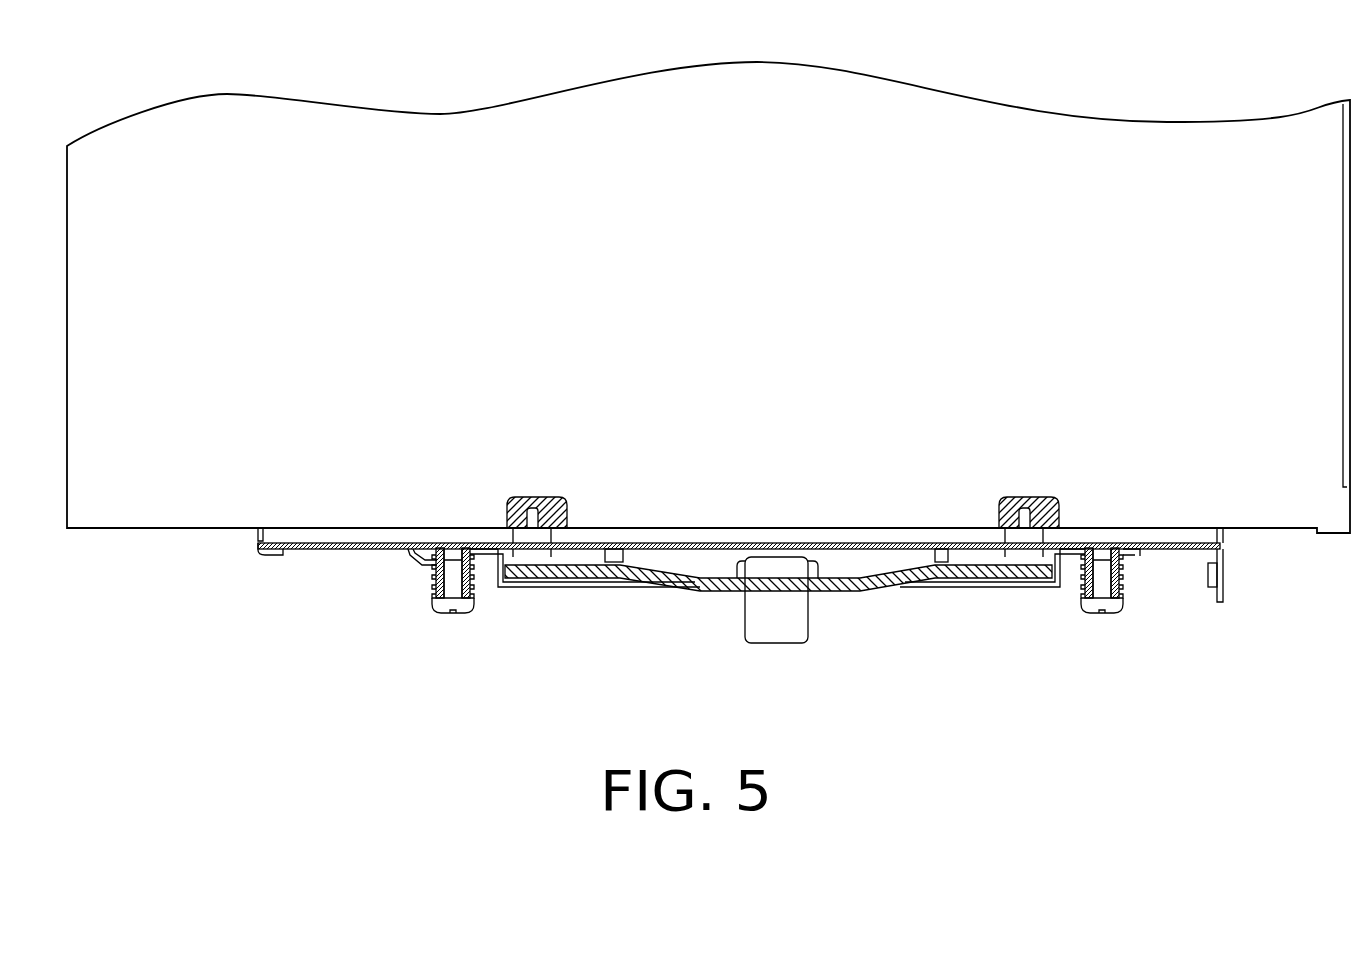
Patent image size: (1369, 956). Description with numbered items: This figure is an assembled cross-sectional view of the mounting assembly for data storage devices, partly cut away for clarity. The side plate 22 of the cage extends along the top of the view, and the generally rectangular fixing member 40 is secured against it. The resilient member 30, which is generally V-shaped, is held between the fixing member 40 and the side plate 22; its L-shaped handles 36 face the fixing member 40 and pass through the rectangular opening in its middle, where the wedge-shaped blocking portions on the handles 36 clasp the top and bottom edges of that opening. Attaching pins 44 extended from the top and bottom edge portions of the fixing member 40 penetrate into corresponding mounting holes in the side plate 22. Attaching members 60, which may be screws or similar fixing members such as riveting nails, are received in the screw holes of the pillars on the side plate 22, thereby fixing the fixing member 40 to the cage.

The side plate 22 is at (1185, 550).
The resilient member 30 is at (843, 590).
The handle 36 is at (768, 625).
The fixing member 40 is at (613, 590).
The attaching pin 44 is at (533, 508).
The attaching member 60 is at (1108, 605).